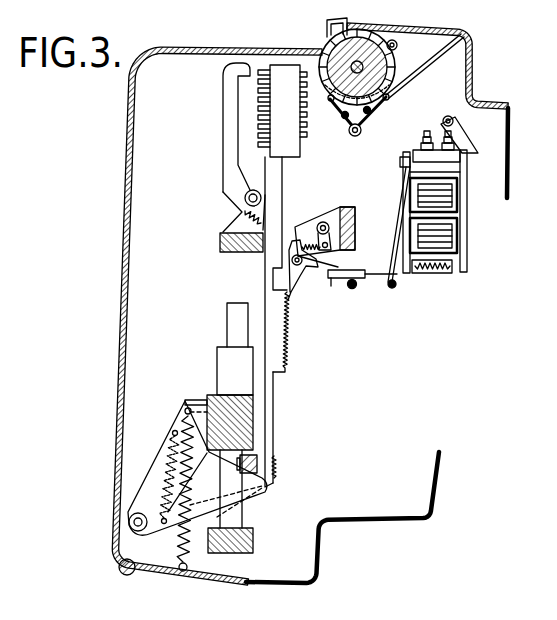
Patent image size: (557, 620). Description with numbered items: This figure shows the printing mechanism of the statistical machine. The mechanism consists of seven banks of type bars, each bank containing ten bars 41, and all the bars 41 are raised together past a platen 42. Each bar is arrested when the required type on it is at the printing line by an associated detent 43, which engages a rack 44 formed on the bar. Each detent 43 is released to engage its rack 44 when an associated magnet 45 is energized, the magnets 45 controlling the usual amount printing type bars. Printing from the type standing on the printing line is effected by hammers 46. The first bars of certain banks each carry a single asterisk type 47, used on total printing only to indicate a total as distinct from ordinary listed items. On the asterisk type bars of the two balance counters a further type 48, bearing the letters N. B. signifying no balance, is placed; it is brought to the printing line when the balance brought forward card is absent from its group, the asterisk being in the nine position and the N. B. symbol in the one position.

The type bar 41 is at (270, 327).
The platen 42 is at (385, 95).
The detent 43 is at (298, 285).
The rack 44 is at (286, 352).
The magnet 45 is at (435, 235).
The hammer 46 is at (228, 152).
The asterisk type 47 is at (312, 51).
The further type 48 is at (311, 135).